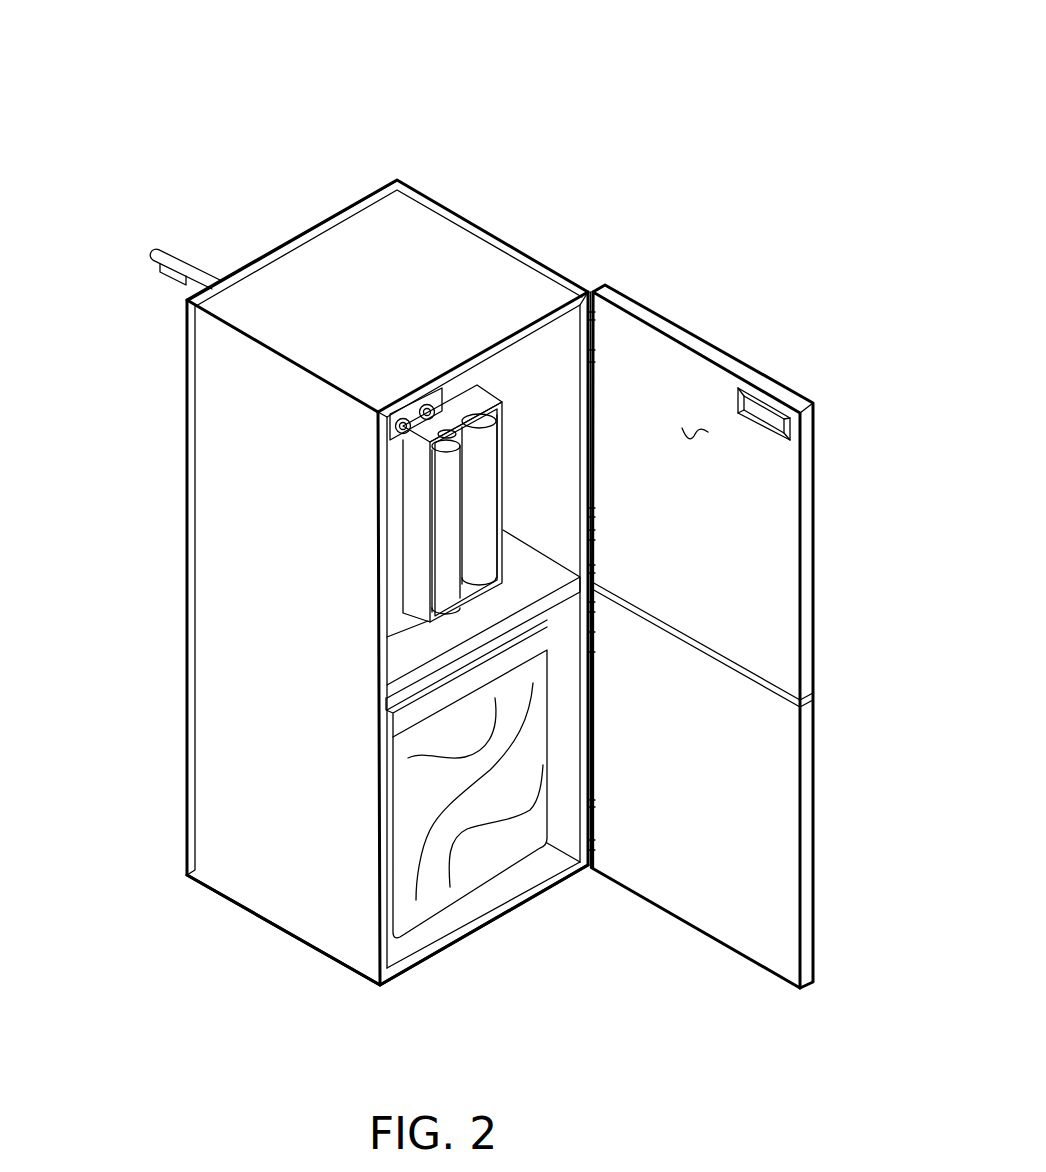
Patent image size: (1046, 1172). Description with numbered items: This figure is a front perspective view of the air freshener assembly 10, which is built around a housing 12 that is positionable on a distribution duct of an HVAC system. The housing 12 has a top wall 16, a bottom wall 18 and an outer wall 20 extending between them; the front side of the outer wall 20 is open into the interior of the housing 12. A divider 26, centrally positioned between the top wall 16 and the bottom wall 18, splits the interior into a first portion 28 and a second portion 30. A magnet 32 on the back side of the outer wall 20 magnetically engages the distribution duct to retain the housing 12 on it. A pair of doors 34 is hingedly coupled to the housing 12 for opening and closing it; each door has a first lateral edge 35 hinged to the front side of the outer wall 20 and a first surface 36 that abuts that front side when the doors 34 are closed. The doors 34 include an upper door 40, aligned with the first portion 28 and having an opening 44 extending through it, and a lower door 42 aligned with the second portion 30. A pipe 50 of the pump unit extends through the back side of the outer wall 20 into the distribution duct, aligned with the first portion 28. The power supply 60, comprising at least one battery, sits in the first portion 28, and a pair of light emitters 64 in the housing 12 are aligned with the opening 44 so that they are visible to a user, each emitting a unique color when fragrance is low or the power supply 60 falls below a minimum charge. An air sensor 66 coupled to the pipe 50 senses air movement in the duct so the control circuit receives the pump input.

The air freshener assembly 10 is at (553, 100).
The housing 12 is at (433, 201).
The top wall 16 is at (520, 280).
The bottom wall 18 is at (343, 963).
The outer wall 20 is at (238, 612).
The divider 26 is at (527, 577).
The first portion 28 is at (528, 364).
The second portion 30 is at (562, 806).
The magnet 32 is at (303, 232).
The doors 34 is at (813, 573).
The first lateral edge 35 is at (576, 768).
The first surface 36 is at (688, 420).
The upper door 40 is at (815, 463).
The lower door 42 is at (815, 846).
The opening 44 is at (774, 410).
The pipe 50 is at (212, 285).
The power supply 60 is at (468, 400).
The light emitters 64 is at (407, 418).
The air sensor 66 is at (171, 279).